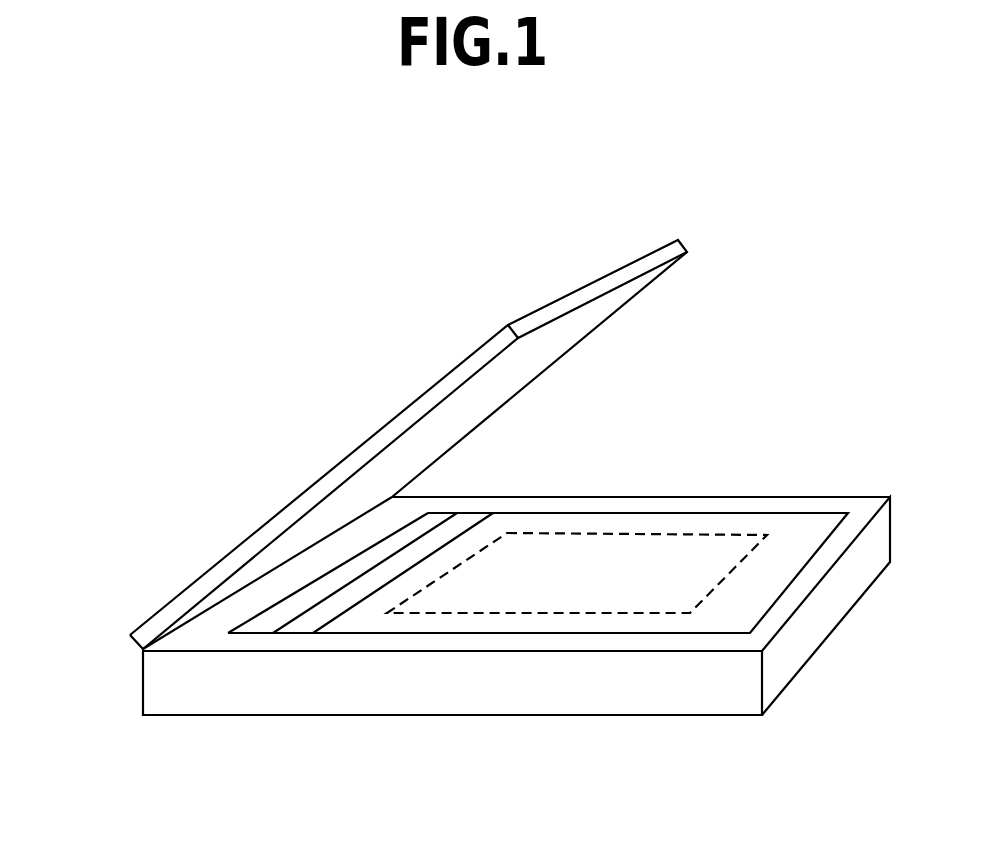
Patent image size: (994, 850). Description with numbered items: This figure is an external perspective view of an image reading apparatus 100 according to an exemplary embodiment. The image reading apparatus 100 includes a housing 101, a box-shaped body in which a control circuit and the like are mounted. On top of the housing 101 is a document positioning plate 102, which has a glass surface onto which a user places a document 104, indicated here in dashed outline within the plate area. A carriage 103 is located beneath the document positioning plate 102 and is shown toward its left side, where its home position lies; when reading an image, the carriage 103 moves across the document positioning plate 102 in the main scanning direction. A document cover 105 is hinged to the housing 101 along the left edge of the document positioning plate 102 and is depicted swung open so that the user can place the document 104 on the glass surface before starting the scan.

The image reading apparatus 100 is at (318, 251).
The housing 101 is at (153, 684).
The document positioning plate 102 is at (800, 527).
The carriage 103 is at (338, 607).
The document 104 is at (653, 557).
The document cover 105 is at (636, 260).